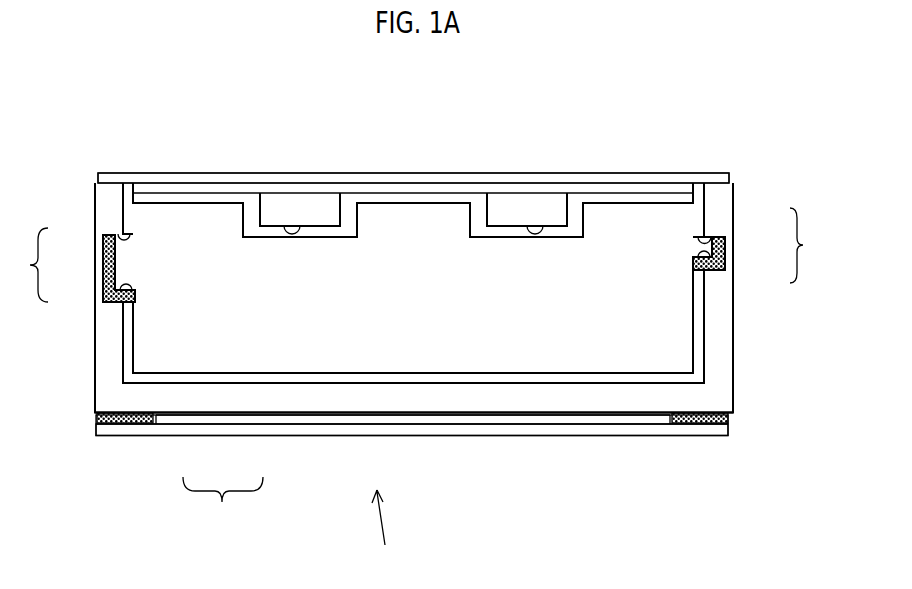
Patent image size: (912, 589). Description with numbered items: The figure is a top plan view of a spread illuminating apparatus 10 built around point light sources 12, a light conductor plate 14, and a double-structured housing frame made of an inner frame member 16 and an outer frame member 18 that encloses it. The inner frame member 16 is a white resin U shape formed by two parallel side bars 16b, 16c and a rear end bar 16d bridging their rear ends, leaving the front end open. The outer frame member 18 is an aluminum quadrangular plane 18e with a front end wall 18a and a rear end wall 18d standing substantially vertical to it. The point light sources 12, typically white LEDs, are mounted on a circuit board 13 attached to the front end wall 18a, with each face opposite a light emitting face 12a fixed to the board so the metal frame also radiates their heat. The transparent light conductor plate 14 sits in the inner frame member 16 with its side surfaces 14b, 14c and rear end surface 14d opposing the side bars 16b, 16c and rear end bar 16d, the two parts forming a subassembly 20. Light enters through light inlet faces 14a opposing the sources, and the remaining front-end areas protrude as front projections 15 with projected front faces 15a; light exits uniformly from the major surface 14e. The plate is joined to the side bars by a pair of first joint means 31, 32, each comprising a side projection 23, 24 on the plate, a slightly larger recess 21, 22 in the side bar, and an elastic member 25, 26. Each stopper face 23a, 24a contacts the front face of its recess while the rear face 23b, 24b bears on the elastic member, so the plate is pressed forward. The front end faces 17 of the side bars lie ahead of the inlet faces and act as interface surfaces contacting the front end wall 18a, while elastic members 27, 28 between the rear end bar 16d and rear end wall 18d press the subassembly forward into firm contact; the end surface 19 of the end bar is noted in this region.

The spread illuminating apparatus 10 is at (400, 572).
The point light source 12 is at (318, 201).
The light emitting face 12a is at (307, 227).
The circuit board 13 is at (228, 188).
The light conductor plate 14 is at (195, 375).
The light inlet face 14a is at (275, 235).
The side surface 14b is at (128, 357).
The side surface 14c is at (699, 357).
The rear end surface 14d is at (465, 373).
The major surface 14e is at (178, 360).
The front projection 15 is at (195, 213).
The projected front face 15a is at (158, 197).
The inner frame member 16 is at (243, 403).
The side bar 16b is at (100, 352).
The side bar 16c is at (728, 353).
The rear end bar 16d is at (340, 405).
The front end face 17 is at (110, 178).
The outer frame member 18 is at (288, 437).
The front end wall 18a is at (375, 180).
The rear end wall 18d is at (398, 428).
The quadrangular plane 18e is at (617, 420).
The end surface 19 is at (517, 417).
The subassembly 20 is at (223, 507).
The recess 21 is at (104, 238).
The recess 22 is at (718, 242).
The side projection 23 is at (120, 266).
The stopper face 23a is at (118, 236).
The rear face 23b is at (124, 290).
The side projection 24 is at (726, 248).
The stopper face 24a is at (706, 238).
The rear face 24b is at (708, 258).
The elastic member 25 is at (115, 295).
The elastic member 26 is at (718, 270).
The elastic member 27 is at (102, 419).
The elastic member 28 is at (698, 423).
The first joint means 31 is at (26, 265).
The first joint means 32 is at (807, 245).